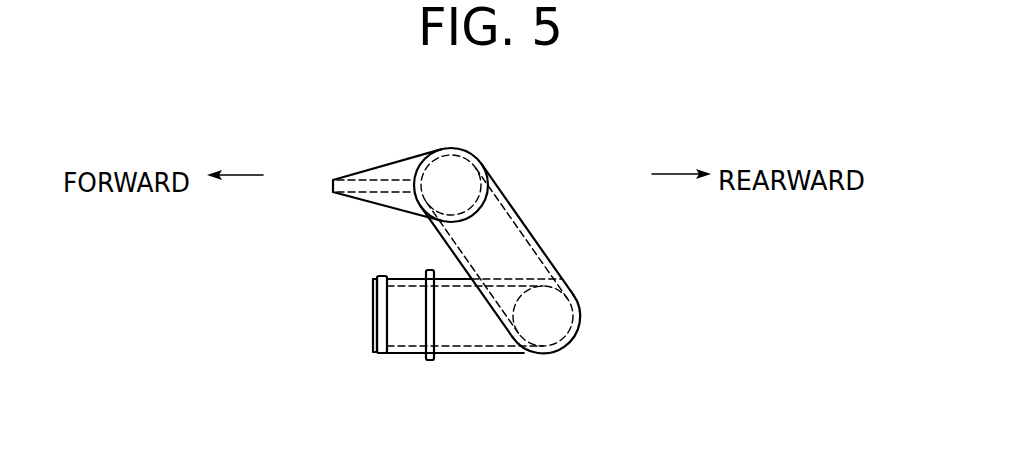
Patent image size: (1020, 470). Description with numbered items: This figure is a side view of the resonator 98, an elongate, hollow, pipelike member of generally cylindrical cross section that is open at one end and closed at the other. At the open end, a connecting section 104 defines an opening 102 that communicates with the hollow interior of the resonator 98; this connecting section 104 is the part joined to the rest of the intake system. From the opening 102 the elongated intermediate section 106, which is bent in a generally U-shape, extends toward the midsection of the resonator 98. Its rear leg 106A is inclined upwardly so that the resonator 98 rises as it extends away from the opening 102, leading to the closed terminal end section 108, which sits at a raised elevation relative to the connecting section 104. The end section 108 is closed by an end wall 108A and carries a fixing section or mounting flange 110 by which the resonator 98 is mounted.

The resonator 98 is at (502, 213).
The opening 102 is at (373, 317).
The connecting section 104 is at (400, 333).
The intermediate section 106 is at (580, 326).
The rear leg 106A is at (517, 243).
The closed terminal end section 108 is at (441, 148).
The end wall 108A is at (453, 173).
The mounting flange 110 is at (385, 172).